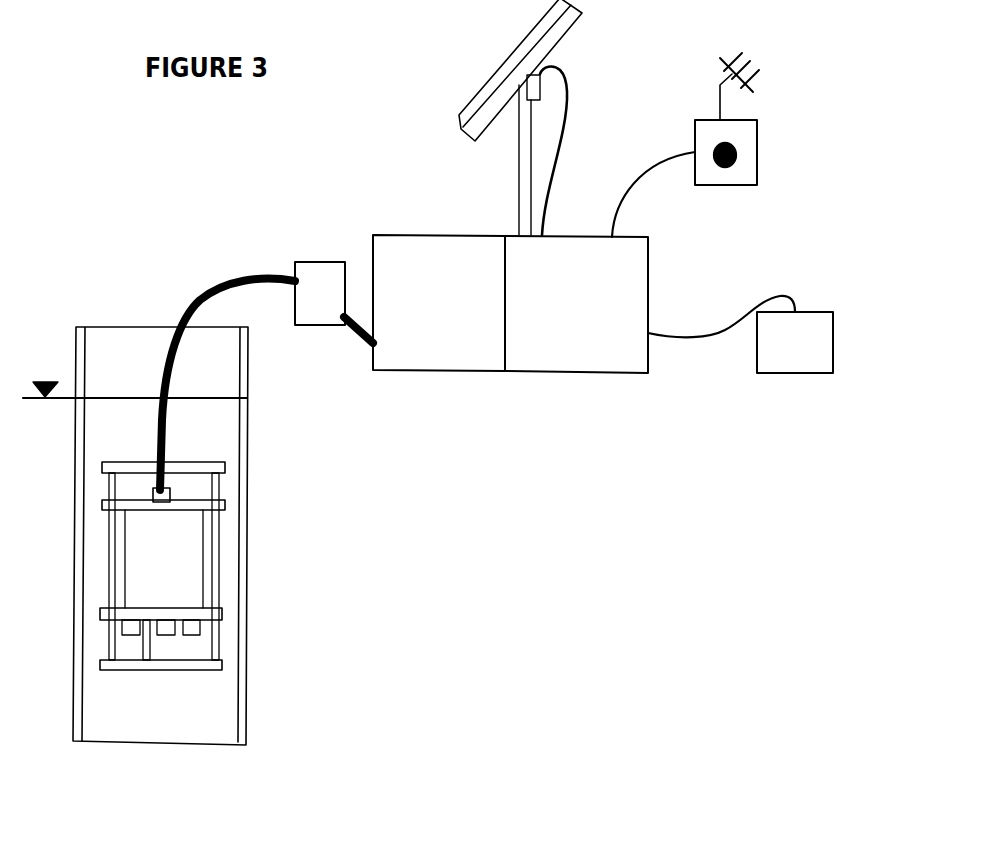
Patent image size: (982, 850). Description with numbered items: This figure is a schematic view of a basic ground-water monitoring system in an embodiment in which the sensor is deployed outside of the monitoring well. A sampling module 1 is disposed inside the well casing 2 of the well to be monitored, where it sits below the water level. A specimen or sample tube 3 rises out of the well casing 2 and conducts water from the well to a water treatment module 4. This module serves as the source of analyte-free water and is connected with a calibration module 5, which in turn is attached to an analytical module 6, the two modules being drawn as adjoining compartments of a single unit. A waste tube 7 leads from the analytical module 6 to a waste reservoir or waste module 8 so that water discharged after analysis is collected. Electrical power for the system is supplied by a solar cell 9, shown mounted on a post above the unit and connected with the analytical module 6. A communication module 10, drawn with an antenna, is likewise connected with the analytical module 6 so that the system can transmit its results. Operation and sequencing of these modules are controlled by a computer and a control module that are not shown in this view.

The sampling module 1 is at (151, 567).
The well casing 2 is at (247, 568).
The sample tube 3 is at (209, 282).
The water treatment module 4 is at (330, 304).
The calibration module 5 is at (457, 318).
The analytical module 6 is at (583, 318).
The waste tube 7 is at (722, 330).
The waste reservoir 8 is at (784, 357).
The solar cell 9 is at (523, 35).
The communication module 10 is at (757, 135).